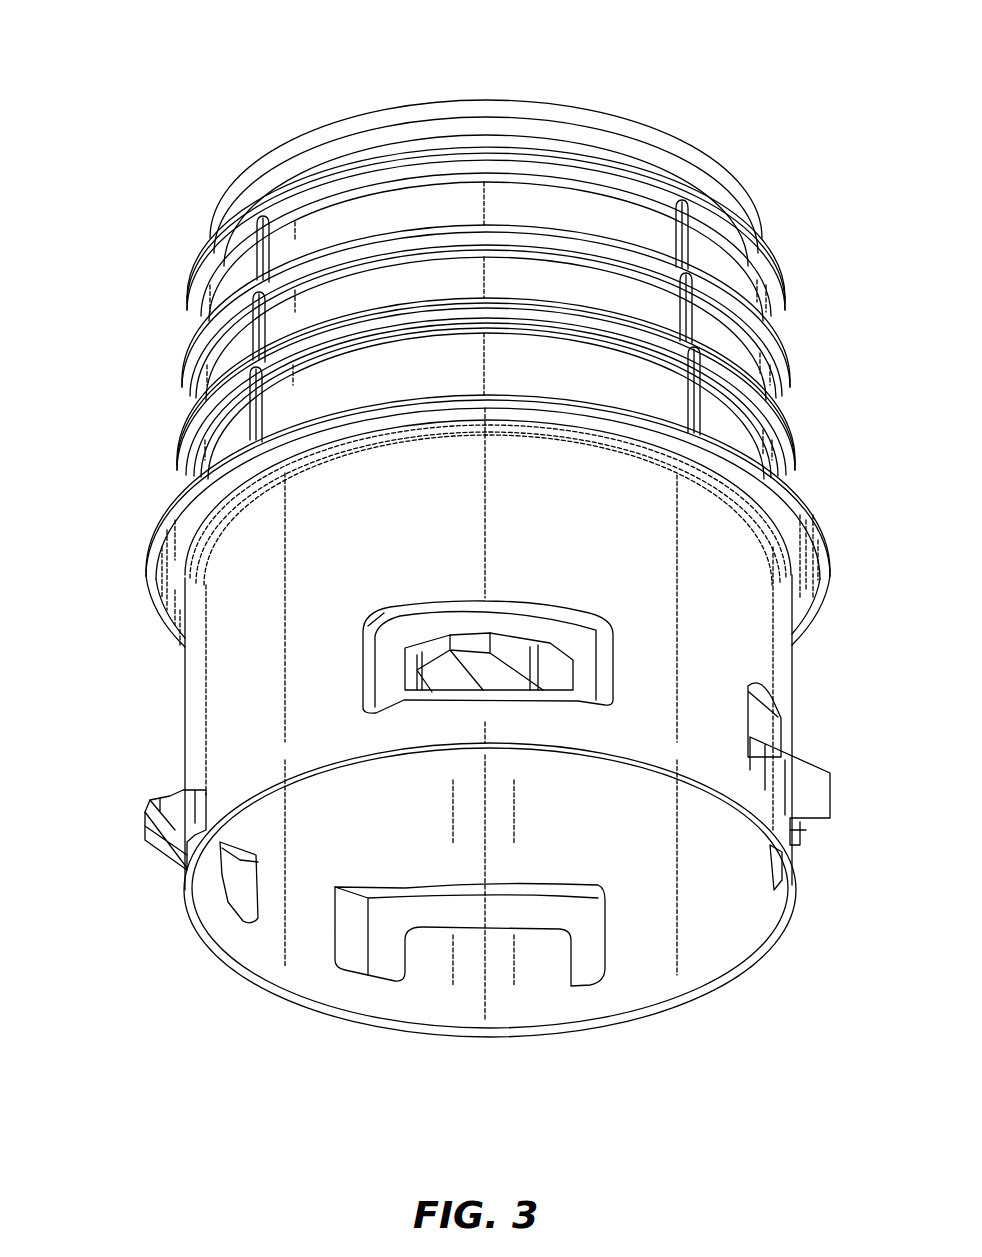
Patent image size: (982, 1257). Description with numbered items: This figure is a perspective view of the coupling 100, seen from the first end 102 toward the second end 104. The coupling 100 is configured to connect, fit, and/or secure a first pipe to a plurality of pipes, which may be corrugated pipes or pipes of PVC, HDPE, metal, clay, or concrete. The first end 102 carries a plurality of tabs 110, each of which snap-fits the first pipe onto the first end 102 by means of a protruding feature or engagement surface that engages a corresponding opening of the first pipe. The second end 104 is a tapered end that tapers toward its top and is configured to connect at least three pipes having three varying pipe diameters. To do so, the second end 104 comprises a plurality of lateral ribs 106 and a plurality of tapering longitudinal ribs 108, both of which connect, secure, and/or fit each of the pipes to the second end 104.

The coupling 100 is at (880, 35).
The first end 102 is at (92, 528).
The second end 104 is at (92, 225).
The lateral ribs 106 is at (190, 303).
The longitudinal ribs 108 is at (258, 250).
The tabs 110 is at (165, 858).